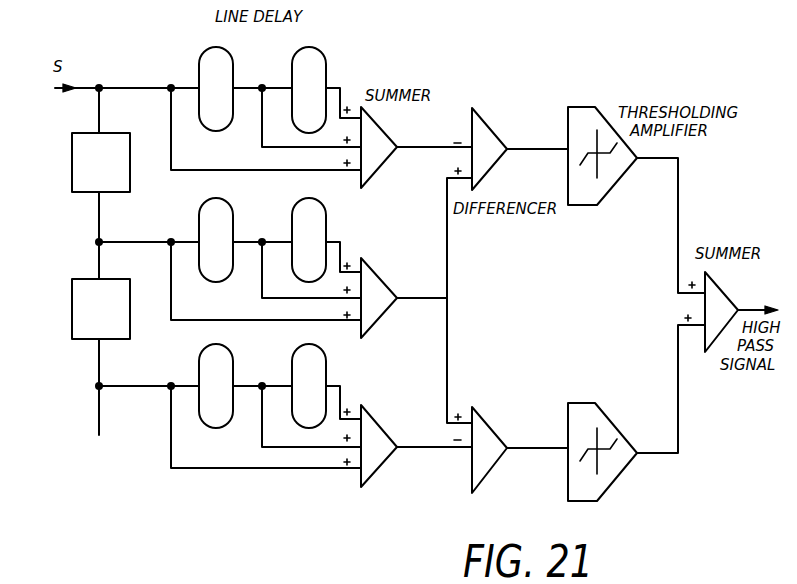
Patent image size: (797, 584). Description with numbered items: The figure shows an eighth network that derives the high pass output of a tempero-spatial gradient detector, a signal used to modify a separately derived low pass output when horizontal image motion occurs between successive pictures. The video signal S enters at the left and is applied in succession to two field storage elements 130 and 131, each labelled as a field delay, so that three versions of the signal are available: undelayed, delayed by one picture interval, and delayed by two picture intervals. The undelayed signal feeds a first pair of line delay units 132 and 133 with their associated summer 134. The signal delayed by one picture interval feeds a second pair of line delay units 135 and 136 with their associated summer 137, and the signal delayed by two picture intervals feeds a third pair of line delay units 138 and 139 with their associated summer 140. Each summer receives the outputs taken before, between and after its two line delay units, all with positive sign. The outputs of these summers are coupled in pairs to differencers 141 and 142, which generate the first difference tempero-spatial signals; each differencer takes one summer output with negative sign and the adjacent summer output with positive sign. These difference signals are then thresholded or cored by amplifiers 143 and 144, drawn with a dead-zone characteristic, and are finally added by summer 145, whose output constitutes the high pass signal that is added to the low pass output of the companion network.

The field storage element 130 is at (70, 158).
The field storage element 131 is at (70, 298).
The line delay unit 132 is at (199, 56).
The line delay unit 133 is at (326, 69).
The summer 134 is at (394, 139).
The line delay unit 135 is at (202, 214).
The line delay unit 136 is at (323, 218).
The summer 137 is at (386, 279).
The line delay unit 138 is at (198, 365).
The line delay unit 139 is at (326, 381).
The summer 140 is at (388, 421).
The differencer 141 is at (497, 142).
The differencer 142 is at (493, 423).
The amplifier 143 is at (576, 105).
The amplifier 144 is at (617, 423).
The summer 145 is at (733, 302).